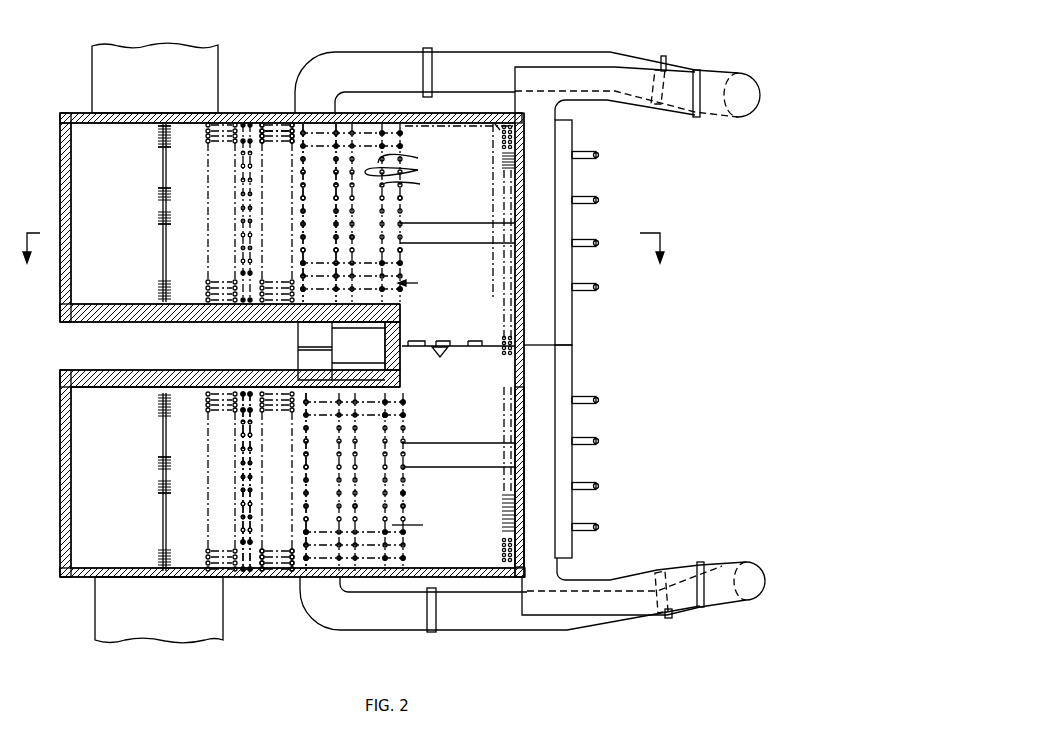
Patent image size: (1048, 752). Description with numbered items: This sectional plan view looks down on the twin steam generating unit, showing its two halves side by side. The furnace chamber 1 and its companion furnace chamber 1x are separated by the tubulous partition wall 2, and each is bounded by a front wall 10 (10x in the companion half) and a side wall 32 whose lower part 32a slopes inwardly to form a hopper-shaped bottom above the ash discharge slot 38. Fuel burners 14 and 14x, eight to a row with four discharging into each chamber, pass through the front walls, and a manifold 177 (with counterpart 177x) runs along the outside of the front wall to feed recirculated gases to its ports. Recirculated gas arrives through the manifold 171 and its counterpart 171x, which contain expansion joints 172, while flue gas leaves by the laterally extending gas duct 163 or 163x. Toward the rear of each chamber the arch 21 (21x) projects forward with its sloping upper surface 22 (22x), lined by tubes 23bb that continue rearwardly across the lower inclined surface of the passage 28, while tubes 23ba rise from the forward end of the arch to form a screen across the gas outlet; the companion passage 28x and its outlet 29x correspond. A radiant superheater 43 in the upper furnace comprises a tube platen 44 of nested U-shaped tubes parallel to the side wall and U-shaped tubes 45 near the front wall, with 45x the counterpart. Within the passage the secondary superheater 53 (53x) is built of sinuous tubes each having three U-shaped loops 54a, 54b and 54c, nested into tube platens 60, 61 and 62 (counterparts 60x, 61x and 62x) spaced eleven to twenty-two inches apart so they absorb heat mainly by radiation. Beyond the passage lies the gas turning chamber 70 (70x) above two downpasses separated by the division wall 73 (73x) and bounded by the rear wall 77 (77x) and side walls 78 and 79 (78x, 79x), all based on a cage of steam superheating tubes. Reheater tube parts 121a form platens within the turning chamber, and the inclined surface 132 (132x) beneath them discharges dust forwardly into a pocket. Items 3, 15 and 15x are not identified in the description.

The furnace chamber 1 is at (486, 183).
The companion furnace chamber 1x is at (478, 423).
The tubulous partition wall 2 is at (476, 350).
The pointer 3 is at (440, 364).
The front wall 10 is at (520, 224).
The right wall of lower housing 10x is at (543, 411).
The fuel burners 14 is at (588, 198).
The companion fuel burners 14x is at (588, 440).
The bar 15 is at (566, 306).
The bar of lower unit 15x is at (567, 376).
The arch 21 is at (427, 285).
The feed direction lower 21x is at (423, 528).
The upper surface of arch 22 is at (392, 252).
The guide lower 22x is at (390, 498).
The screen tubes 23ba is at (402, 198).
The arch lining tubes 23bb is at (250, 302).
The passage 28 is at (376, 246).
The companion gaspass 28x is at (382, 509).
The guide lower 29x is at (403, 478).
The side wall 32 is at (407, 119).
The lower side wall part 32a is at (493, 214).
The ash discharge slot 38 is at (462, 244).
The radiant superheater 43 is at (500, 128).
The tube platen 44 is at (452, 124).
The U-shaped tubes 45 is at (508, 140).
The coupling lower 45x is at (510, 498).
The secondary superheater 53 is at (334, 130).
The rod lower 53x is at (327, 557).
The first U-shaped loop 54a is at (418, 158).
The second U-shaped loop 54b is at (325, 176).
The third U-shaped loop 54c is at (246, 102).
The tube platen 60 is at (402, 182).
The loop lower 60x is at (365, 415).
The tube platen 61 is at (323, 161).
The rod array lower 61x is at (330, 417).
The tube platens 62 is at (272, 138).
The rod group lower 62x is at (292, 556).
The gas turning chamber 70 is at (147, 252).
The shaft portion lower 70x is at (157, 533).
The division wall 73 is at (163, 180).
The shaft lower 73x is at (163, 463).
The rear wall 77 is at (70, 210).
The lower housing 77x is at (72, 502).
The side wall 78 is at (117, 113).
The housing bottom wall 78x is at (178, 578).
The side wall 79 is at (160, 322).
The partition lower 79x is at (143, 373).
The reheater tube part 121a is at (184, 149).
The inclined surface 132 is at (223, 258).
The rod group lower 132x is at (217, 408).
The gas duct 163 is at (168, 50).
The support lower 163x is at (213, 620).
The manifold 171 is at (357, 62).
The pipe lower 171x is at (377, 620).
The expansion joints 172 is at (432, 48).
The manifold 177 is at (552, 270).
The channel lower 177x is at (553, 545).